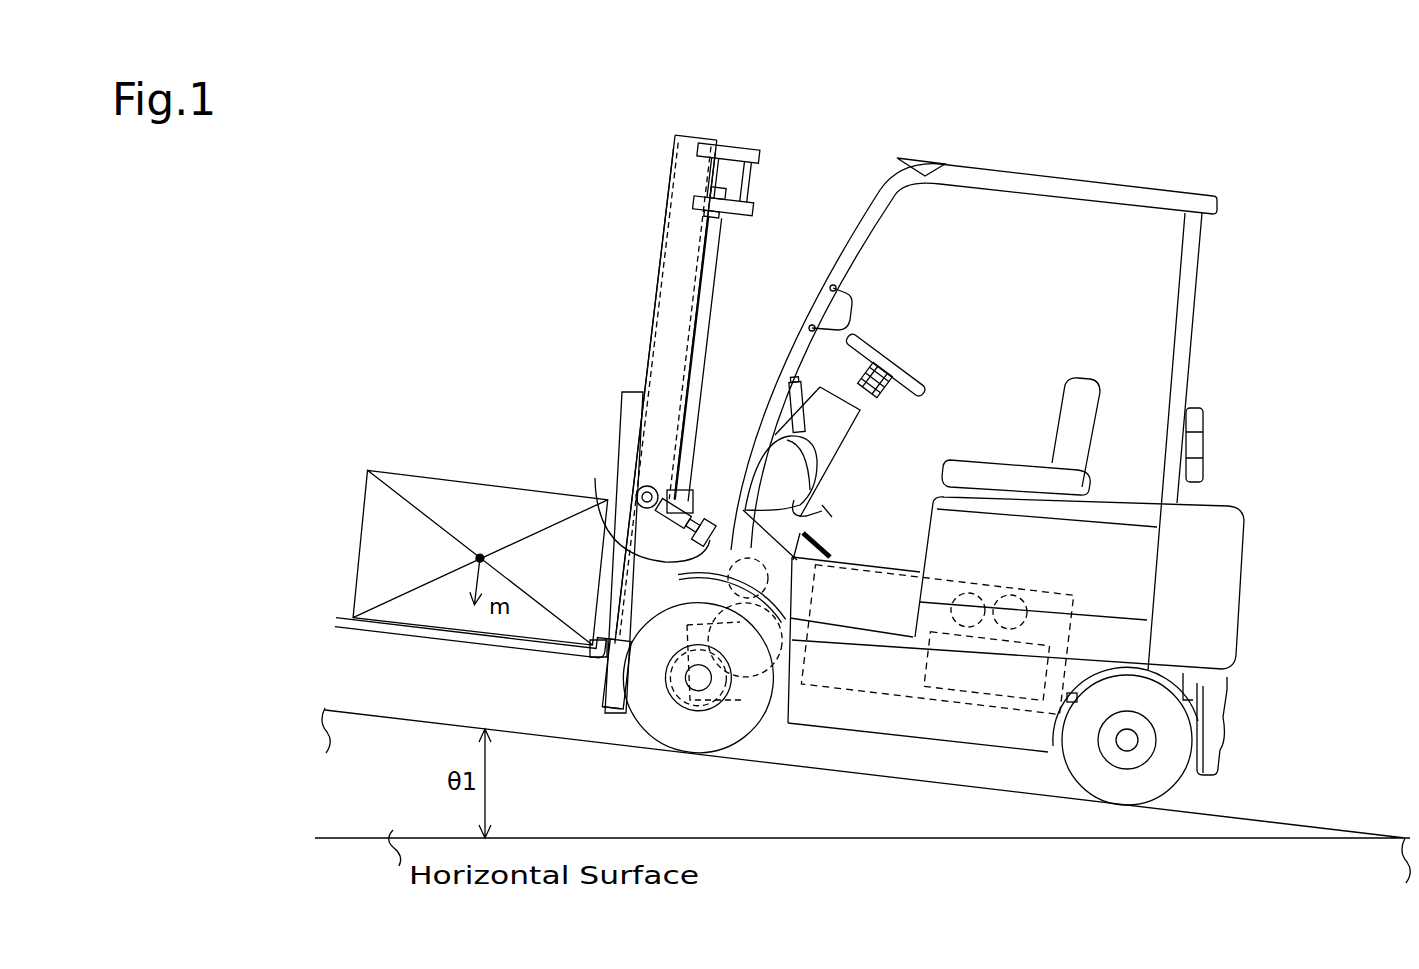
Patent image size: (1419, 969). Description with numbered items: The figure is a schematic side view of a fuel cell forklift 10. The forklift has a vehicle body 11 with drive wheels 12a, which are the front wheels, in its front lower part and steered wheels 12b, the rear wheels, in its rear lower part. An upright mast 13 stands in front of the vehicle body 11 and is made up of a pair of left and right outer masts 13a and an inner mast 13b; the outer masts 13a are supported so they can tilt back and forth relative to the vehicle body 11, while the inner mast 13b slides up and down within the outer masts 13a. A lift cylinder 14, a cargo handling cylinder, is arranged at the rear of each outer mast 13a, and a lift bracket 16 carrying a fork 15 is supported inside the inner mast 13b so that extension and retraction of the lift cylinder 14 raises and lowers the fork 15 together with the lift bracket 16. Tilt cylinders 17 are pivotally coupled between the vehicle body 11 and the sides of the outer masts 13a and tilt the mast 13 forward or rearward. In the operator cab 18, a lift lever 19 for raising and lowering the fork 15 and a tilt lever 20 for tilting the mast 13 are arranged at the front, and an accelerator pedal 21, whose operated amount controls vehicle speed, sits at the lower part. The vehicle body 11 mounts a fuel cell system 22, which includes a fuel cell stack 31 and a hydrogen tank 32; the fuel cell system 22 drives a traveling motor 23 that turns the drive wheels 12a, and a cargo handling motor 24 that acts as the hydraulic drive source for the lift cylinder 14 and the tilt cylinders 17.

The fuel cell forklift 10 is at (804, 139).
The vehicle body 11 is at (825, 737).
The drive wheels (front wheels) 12a is at (692, 750).
The steered wheels (rear wheels) 12b is at (1177, 800).
The mast 13 is at (666, 221).
The outer masts 13a is at (657, 296).
The inner mast 13b is at (654, 345).
The lift cylinder 14 is at (712, 253).
The fork 15 is at (478, 648).
The lift bracket 16 is at (607, 574).
The tilt cylinders 17 is at (636, 492).
The operator cab 18 is at (1020, 367).
The lift lever 19 is at (832, 378).
The tilt lever 20 is at (873, 404).
The accelerator pedal 21 is at (832, 512).
The fuel cell system 22 is at (997, 717).
The traveling motor 23 is at (748, 700).
The cargo handling motor 24 is at (748, 560).
The fuel cell stack 31 is at (932, 668).
The hydrogen tank 32 is at (1012, 600).